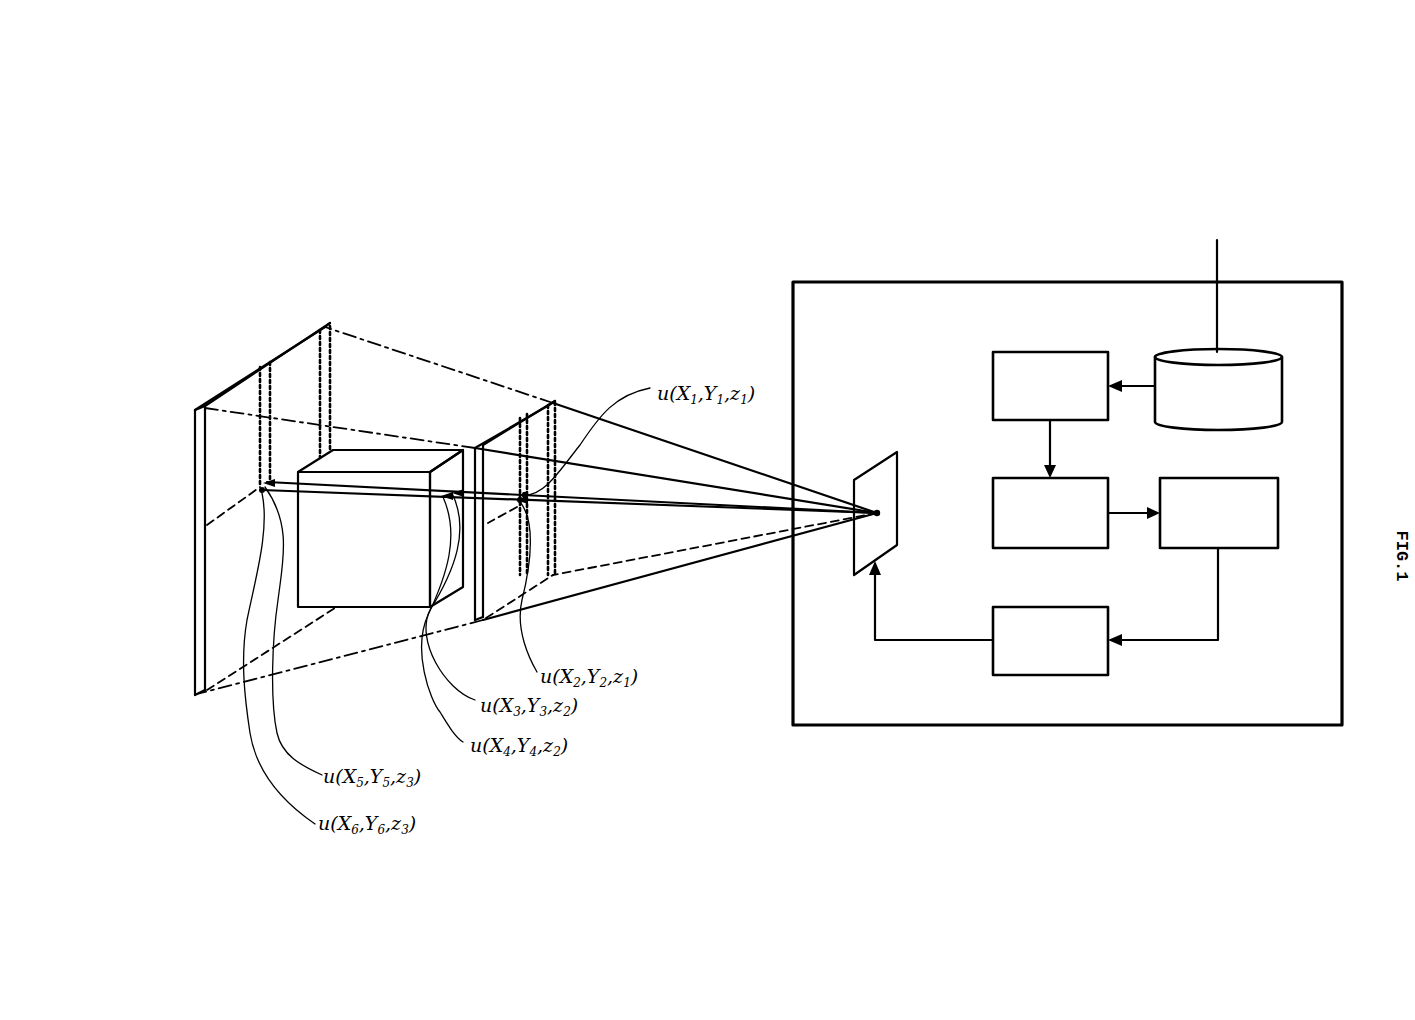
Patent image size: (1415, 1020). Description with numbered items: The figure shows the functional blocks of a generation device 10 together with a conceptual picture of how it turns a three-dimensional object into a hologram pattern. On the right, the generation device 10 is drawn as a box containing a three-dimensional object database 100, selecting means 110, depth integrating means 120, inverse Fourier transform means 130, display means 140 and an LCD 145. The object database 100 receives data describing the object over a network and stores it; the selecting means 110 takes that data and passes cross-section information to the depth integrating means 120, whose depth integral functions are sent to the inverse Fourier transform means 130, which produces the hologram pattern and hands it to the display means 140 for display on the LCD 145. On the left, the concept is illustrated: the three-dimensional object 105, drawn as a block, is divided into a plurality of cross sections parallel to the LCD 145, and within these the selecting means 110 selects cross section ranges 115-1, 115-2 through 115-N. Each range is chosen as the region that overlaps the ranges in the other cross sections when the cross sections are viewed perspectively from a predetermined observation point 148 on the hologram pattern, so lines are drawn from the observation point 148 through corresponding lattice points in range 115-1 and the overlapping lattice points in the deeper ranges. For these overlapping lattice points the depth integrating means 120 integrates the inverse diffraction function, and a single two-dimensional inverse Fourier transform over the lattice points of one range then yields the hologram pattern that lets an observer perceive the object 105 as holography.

The generation device 10 is at (893, 282).
The 3D object database 100 is at (1257, 348).
The 3D object 105 is at (373, 610).
The selecting means 110 is at (1052, 352).
The cross section range 115-N is at (324, 327).
The cross section range 115-2 is at (550, 405).
The cross section range 115-1 is at (555, 407).
The depth integrating means 120 is at (1078, 478).
The inverse Fourier transform means 130 is at (1247, 549).
The display means 140 is at (1052, 607).
The LCD 145 is at (880, 463).
The observation point 148 is at (880, 511).